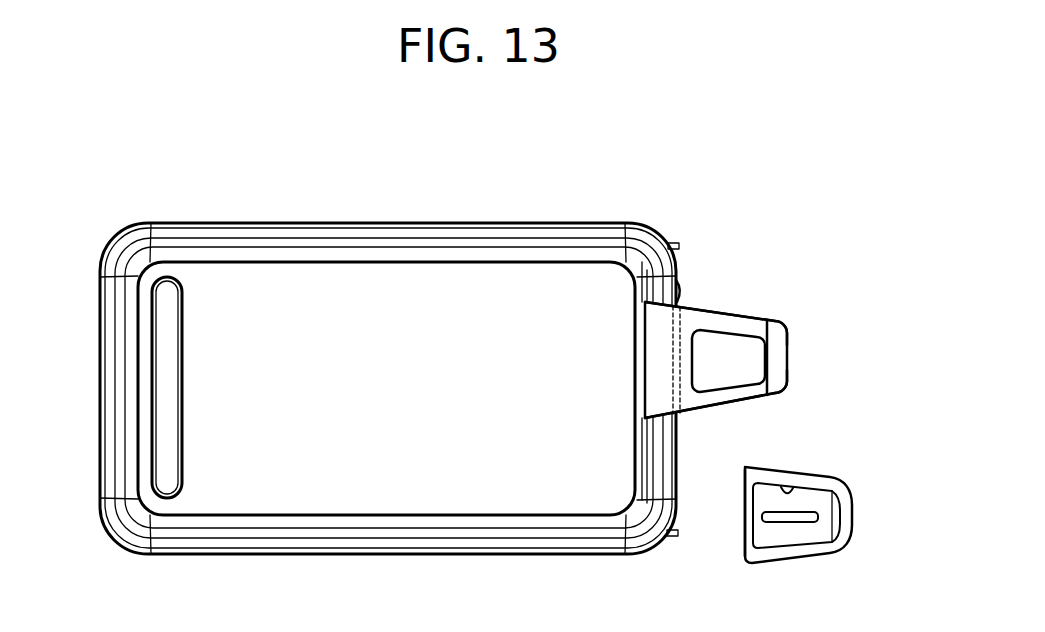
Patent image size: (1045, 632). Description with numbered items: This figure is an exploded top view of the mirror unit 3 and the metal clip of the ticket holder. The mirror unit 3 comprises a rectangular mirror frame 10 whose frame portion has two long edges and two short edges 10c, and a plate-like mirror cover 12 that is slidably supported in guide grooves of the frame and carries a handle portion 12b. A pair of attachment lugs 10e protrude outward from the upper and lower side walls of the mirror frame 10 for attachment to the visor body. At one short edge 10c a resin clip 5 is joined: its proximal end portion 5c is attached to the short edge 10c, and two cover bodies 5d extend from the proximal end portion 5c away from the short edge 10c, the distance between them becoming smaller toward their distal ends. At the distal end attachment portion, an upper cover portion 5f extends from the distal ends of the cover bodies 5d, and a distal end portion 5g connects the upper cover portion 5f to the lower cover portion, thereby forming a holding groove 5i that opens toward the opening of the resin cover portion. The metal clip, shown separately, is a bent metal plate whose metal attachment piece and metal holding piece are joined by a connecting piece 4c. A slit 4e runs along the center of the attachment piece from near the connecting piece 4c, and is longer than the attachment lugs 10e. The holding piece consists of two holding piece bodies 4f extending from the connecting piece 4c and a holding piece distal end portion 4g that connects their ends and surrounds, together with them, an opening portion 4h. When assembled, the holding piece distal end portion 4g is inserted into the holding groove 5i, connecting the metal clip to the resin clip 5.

The mirror unit 3 is at (391, 366).
The mirror cover 12 is at (300, 303).
The handle portion 12b is at (163, 379).
The mirror frame 10 is at (655, 226).
The attachment lugs 10e is at (674, 246).
The short edge 10c is at (665, 270).
The resin clip 5 is at (744, 353).
The proximal end portion 5c is at (686, 338).
The cover bodies 5d is at (735, 318).
The holding groove 5i is at (788, 333).
The upper cover portion 5f is at (778, 358).
The distal end portion 5g is at (788, 377).
The connecting piece 4c is at (744, 513).
The opening portion 4h is at (787, 486).
The holding piece bodies 4f is at (815, 480).
The slit 4e is at (778, 523).
The holding piece distal end portion 4g is at (799, 520).